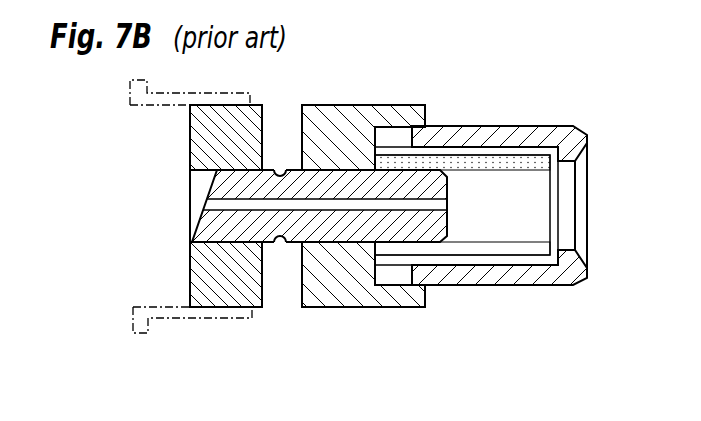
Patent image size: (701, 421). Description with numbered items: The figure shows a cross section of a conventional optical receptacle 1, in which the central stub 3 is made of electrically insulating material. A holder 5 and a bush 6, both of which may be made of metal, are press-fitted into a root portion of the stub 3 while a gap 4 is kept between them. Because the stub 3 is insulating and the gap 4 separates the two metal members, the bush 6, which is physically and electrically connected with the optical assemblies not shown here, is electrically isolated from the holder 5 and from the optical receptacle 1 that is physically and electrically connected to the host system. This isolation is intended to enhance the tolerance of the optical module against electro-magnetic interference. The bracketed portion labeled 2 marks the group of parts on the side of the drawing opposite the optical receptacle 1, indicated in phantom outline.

The optical receptacle 1 is at (445, 250).
The connector socket assembly 2 is at (186, 239).
The stub 3 is at (298, 231).
The gap 4 is at (283, 166).
The holder 5 is at (363, 227).
The bush 6 is at (241, 290).